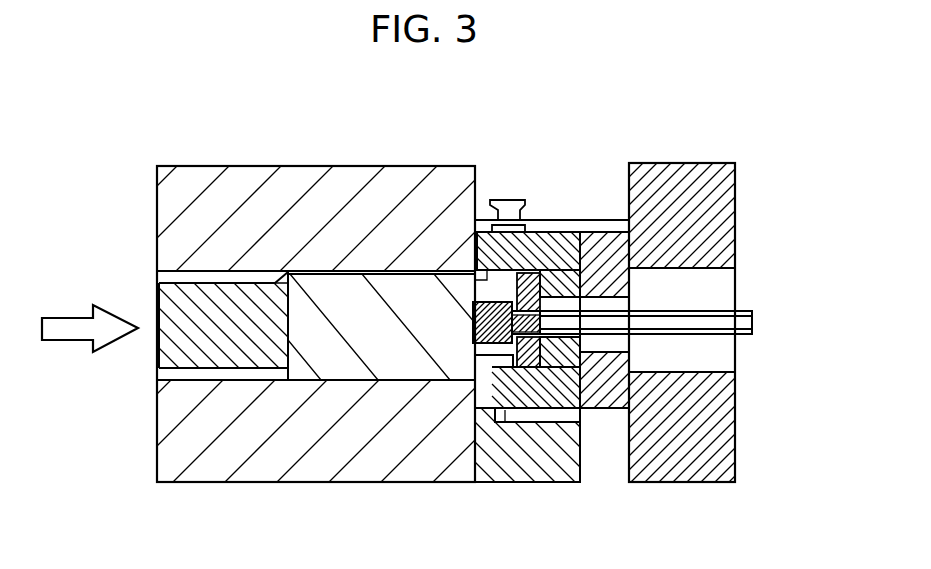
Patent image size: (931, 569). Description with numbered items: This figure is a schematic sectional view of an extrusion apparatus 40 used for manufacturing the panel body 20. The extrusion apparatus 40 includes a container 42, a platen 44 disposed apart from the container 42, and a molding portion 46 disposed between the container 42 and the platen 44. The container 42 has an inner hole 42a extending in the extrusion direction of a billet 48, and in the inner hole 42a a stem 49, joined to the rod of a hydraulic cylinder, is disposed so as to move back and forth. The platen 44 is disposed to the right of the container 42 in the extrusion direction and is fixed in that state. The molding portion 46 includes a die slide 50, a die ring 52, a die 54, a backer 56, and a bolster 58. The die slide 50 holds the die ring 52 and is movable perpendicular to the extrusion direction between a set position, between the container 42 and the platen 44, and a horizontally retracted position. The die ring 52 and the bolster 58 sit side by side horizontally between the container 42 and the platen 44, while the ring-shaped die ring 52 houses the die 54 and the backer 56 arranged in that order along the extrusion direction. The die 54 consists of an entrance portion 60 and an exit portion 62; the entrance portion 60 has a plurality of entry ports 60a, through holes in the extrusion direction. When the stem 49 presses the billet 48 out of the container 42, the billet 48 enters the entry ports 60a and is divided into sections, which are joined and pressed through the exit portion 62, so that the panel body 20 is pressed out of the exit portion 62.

The panel body 20 is at (722, 334).
The extrusion apparatus 40 is at (716, 140).
The container 42 is at (303, 171).
The inner hole 42a is at (182, 276).
The platen 44 is at (692, 163).
The molding portion 46 is at (582, 220).
The billet 48 is at (427, 370).
The stem 49 is at (167, 360).
The die slide 50 is at (563, 433).
The die ring 52 is at (555, 233).
The die 54 is at (557, 132).
The backer 56 is at (575, 353).
The bolster 58 is at (618, 233).
The entrance portion 60 is at (502, 200).
The entry ports 60a is at (495, 358).
The exit portion 62 is at (526, 270).